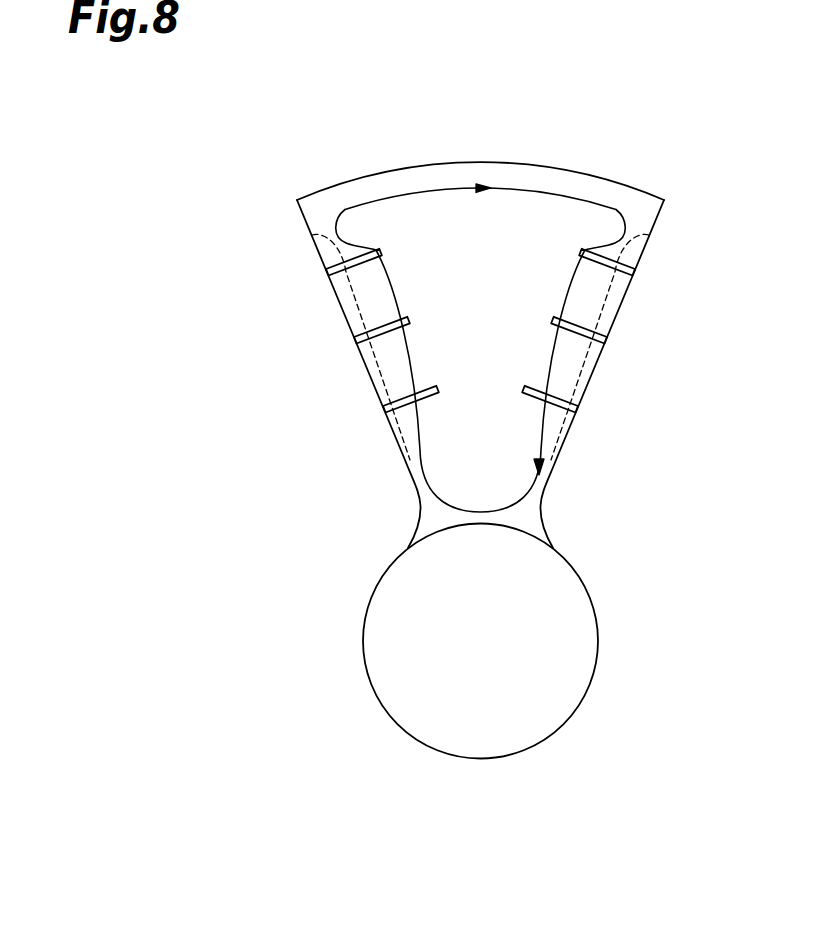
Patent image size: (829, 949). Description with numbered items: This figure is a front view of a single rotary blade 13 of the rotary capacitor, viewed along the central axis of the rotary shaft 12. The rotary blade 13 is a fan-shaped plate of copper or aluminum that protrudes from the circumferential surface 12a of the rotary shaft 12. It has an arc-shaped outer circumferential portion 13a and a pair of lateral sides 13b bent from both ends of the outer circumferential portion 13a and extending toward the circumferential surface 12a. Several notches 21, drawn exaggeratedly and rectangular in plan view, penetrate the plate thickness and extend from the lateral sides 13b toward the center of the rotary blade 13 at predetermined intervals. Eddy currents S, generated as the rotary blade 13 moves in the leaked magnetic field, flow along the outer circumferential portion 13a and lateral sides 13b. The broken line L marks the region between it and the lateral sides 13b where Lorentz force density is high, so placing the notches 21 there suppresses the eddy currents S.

The rotary shaft 12 is at (525, 675).
The circumferential surface 12a is at (598, 580).
The rotary blade 13 is at (479, 314).
The outer circumferential portion 13a is at (472, 150).
The lateral sides 13b is at (297, 243).
The notches 21 is at (326, 276).
The broken line L is at (357, 305).
The eddy currents S is at (433, 210).